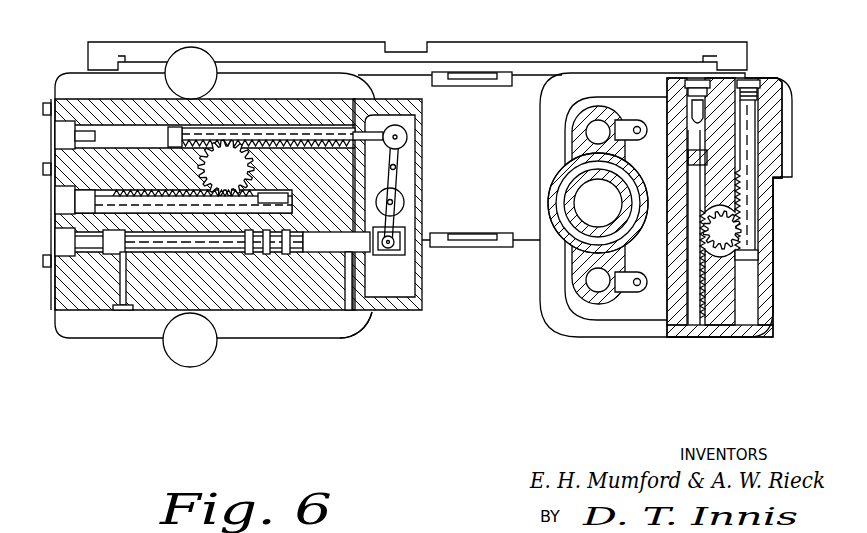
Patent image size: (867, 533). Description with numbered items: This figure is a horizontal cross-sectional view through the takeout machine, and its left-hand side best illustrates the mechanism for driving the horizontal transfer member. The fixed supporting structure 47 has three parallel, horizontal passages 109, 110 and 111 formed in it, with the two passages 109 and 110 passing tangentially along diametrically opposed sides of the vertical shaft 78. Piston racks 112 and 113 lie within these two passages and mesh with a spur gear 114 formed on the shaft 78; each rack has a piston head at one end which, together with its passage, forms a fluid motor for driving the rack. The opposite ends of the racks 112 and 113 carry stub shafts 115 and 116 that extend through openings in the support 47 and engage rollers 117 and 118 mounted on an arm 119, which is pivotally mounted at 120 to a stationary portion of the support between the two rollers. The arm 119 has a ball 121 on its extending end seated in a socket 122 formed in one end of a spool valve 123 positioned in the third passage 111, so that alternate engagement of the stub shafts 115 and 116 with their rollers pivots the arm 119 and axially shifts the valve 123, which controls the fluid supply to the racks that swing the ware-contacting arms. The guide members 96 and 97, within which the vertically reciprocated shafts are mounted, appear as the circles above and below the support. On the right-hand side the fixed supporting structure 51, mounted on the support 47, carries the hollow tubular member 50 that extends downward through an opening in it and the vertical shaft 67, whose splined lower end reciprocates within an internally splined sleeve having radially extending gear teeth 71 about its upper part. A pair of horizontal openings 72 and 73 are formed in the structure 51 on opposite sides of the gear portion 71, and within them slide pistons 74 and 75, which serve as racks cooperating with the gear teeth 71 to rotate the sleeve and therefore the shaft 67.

The fixed supporting structure 47 is at (303, 340).
The hollow tubular member 50 is at (565, 192).
The fixed supporting structure 51 is at (590, 338).
The vertical shaft 67 is at (728, 230).
The gear teeth 71 is at (735, 257).
The horizontal opening 72 is at (690, 128).
The horizontal opening 73 is at (753, 327).
The piston 74 is at (700, 323).
The piston 75 is at (750, 130).
The vertical shaft 78 is at (224, 165).
The guide member 96 is at (195, 366).
The guide member 97 is at (196, 102).
The horizontal passage 109 is at (112, 124).
The horizontal passage 110 is at (85, 193).
The horizontal passage 111 is at (73, 236).
The piston rack 112 is at (277, 133).
The piston rack 113 is at (68, 234).
The spur gear 114 is at (231, 150).
The stub shaft 115 is at (372, 130).
The stub shaft 116 is at (285, 200).
The roller 117 is at (407, 137).
The roller 118 is at (404, 203).
The arm 119 is at (398, 170).
The pivot 120 is at (400, 163).
The ball 121 is at (388, 256).
The socket 122 is at (400, 256).
The spool valve 123 is at (350, 313).